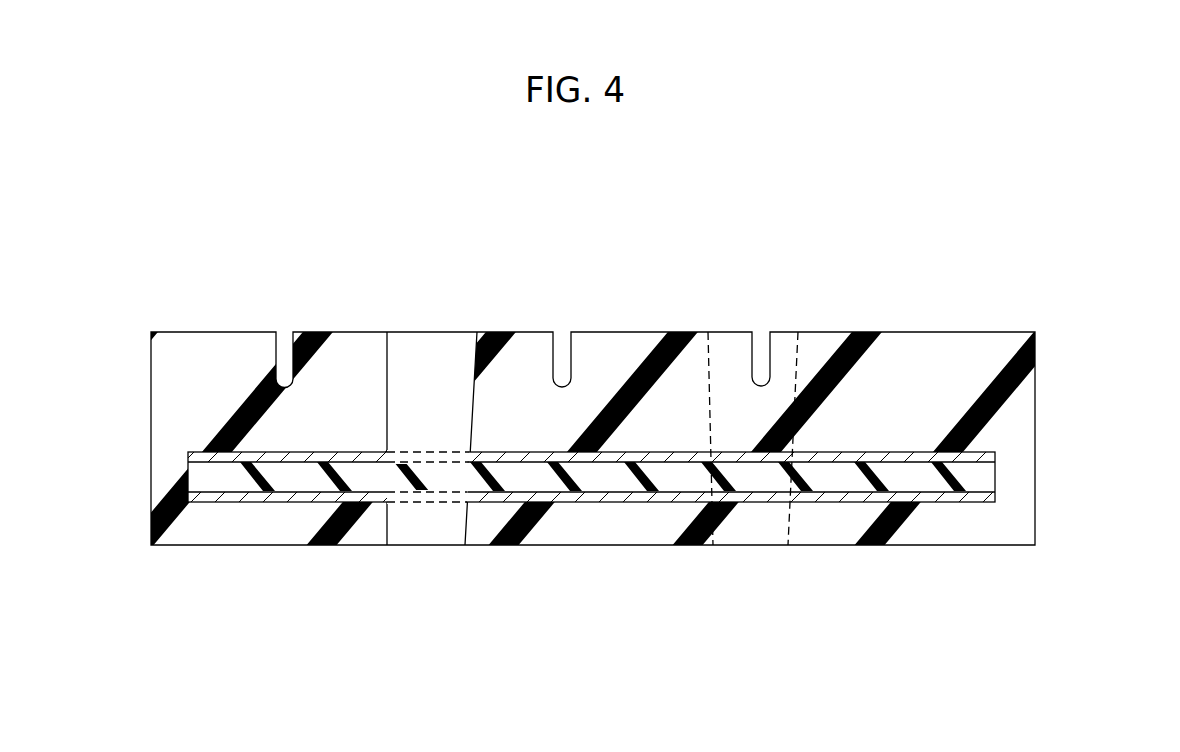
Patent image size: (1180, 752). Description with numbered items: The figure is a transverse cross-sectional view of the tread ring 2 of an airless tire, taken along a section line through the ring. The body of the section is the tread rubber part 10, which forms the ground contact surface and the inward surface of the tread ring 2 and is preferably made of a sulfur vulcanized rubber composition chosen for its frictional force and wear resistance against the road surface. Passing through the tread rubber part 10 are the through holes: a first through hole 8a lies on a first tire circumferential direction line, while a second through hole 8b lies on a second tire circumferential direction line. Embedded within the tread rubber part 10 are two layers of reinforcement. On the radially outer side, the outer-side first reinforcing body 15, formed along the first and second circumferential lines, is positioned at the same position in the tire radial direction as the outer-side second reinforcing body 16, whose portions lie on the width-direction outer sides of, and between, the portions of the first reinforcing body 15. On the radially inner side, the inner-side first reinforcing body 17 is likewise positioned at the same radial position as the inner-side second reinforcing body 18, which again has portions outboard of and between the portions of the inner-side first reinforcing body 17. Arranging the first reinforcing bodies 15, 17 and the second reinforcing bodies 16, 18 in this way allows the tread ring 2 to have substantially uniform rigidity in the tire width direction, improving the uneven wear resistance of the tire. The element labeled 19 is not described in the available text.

The tread ring 2 is at (563, 399).
The tread rubber part 10 is at (200, 390).
The first through hole 8a is at (430, 377).
The second through hole 8b is at (730, 367).
The outer-side first reinforcing body 15 is at (452, 453).
The outer-side second reinforcing body 16 is at (347, 452).
The inner-side first reinforcing body 17 is at (430, 497).
The inner-side second reinforcing body 18 is at (278, 497).
The flat cable 19 is at (975, 474).